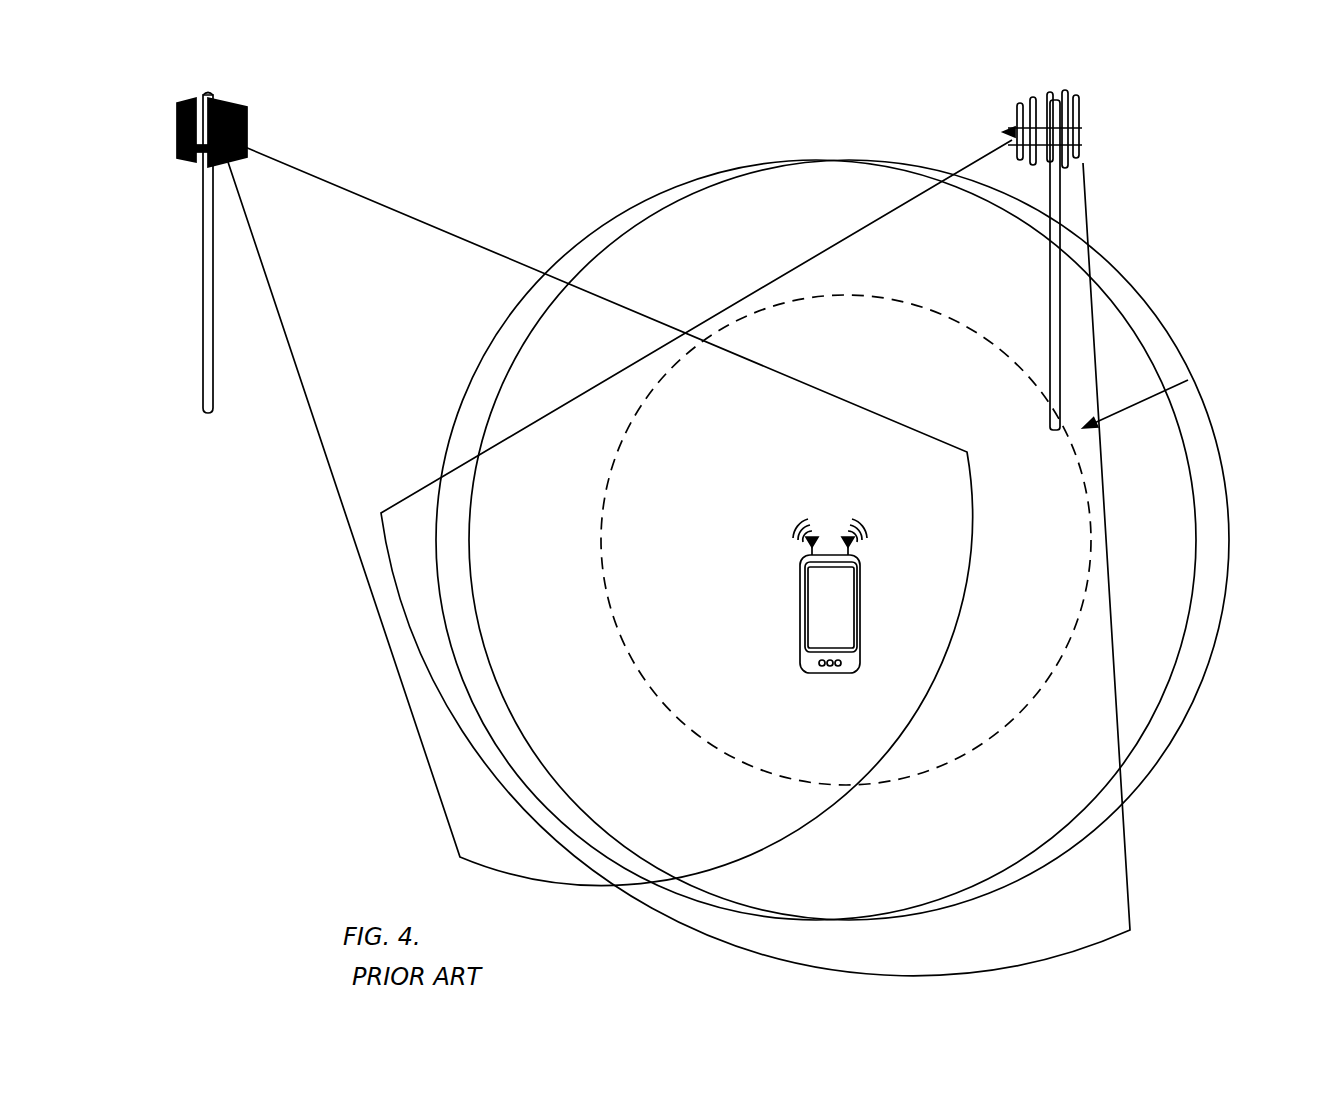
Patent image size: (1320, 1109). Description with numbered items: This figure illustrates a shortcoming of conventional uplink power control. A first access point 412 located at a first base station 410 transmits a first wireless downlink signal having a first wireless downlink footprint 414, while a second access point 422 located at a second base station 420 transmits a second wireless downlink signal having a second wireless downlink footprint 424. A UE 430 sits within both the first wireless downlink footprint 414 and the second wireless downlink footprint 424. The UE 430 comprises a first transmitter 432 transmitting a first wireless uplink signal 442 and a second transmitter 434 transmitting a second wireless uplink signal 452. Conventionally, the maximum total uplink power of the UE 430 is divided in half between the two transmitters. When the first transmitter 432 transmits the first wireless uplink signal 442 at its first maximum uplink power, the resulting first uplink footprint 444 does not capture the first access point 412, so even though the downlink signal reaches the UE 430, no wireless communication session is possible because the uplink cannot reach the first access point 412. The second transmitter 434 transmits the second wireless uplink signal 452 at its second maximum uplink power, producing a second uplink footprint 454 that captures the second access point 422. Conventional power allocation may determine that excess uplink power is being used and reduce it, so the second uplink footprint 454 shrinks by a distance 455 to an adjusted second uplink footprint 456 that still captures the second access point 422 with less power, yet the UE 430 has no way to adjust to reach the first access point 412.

The first base station 410 is at (152, 315).
The first access point 412 is at (228, 95).
The first wireless downlink footprint 414 is at (372, 282).
The second base station 420 is at (1078, 260).
The second access point 422 is at (1083, 133).
The second wireless downlink footprint 424 is at (1050, 192).
The UE 430 is at (828, 675).
The first transmitter 432 is at (806, 542).
The second transmitter 434 is at (854, 542).
The first wireless uplink signal 442 is at (769, 506).
The first uplink footprint 444 is at (455, 410).
The second wireless uplink signal 452 is at (881, 506).
The second uplink footprint 454 is at (1227, 483).
The distance 455 is at (1188, 380).
The adjusted second uplink footprint 456 is at (942, 305).